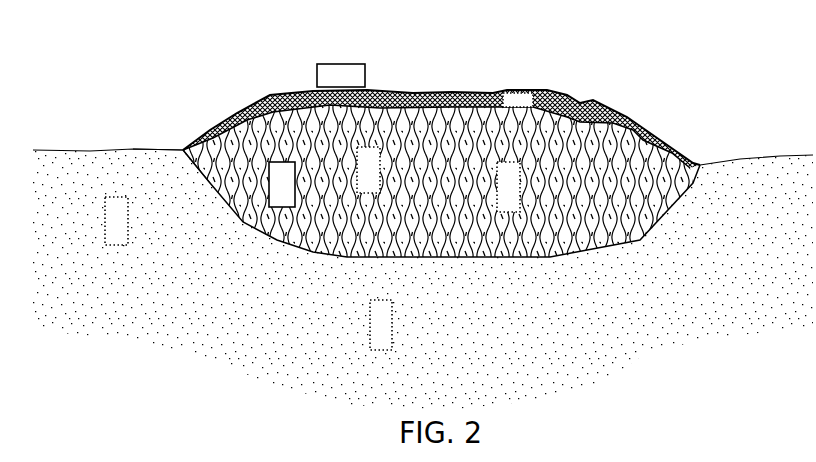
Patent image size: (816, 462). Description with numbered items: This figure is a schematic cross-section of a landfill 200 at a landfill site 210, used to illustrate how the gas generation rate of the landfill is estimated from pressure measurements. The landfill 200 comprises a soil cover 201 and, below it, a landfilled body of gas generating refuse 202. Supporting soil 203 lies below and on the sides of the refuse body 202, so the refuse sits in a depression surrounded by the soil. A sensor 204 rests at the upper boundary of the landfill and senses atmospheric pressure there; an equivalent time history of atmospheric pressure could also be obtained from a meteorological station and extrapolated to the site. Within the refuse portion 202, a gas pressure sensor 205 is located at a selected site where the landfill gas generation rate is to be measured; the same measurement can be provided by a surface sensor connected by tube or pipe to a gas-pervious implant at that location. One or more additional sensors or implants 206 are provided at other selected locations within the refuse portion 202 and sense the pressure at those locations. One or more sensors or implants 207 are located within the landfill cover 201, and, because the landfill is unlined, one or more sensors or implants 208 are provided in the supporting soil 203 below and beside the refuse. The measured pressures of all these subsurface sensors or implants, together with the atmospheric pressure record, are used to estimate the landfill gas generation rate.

The landfill 200 is at (450, 106).
The soil cover 201 is at (443, 89).
The landfilled body of gas generating refuse 202 is at (645, 152).
The supporting soil 203 is at (624, 358).
The sensor 204 is at (317, 73).
The gas pressure sensor 205 is at (269, 173).
The additional sensors or implants 206 is at (497, 170).
The sensors or implants 207 is at (522, 93).
The sensors or implants 208 is at (128, 222).
The landfill site 210 is at (172, 136).